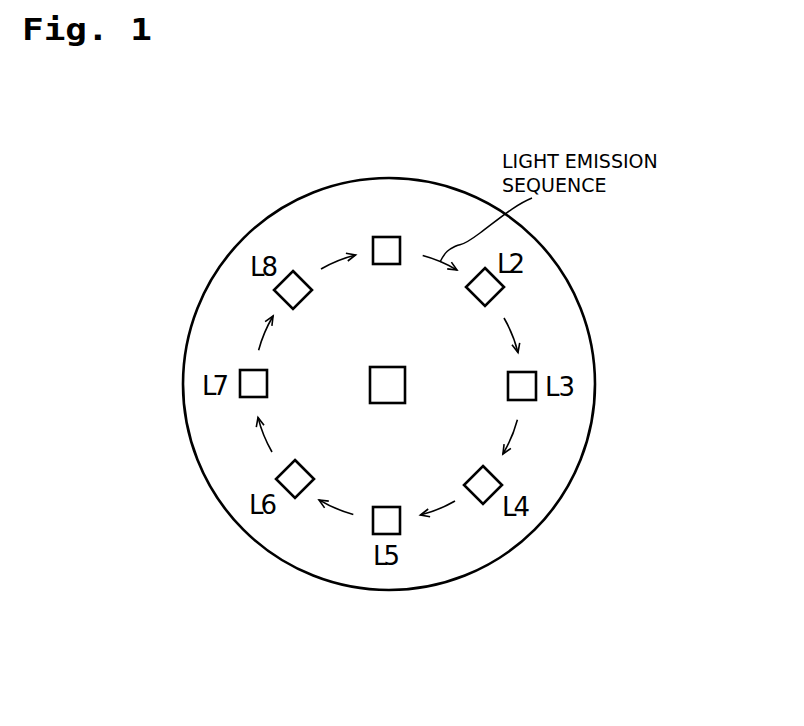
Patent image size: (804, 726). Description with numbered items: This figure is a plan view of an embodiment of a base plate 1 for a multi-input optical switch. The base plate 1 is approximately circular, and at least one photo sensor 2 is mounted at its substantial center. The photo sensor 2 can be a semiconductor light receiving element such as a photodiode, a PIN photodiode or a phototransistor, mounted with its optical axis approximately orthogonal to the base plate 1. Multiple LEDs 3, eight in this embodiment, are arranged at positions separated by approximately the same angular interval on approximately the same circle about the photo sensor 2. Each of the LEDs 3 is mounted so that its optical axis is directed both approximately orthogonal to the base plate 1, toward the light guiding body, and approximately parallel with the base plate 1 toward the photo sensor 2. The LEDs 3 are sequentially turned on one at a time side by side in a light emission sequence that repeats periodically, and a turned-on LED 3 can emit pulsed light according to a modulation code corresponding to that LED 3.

The base plate 1 is at (585, 343).
The photo sensor 2 is at (396, 381).
The LEDs 3 is at (392, 247).